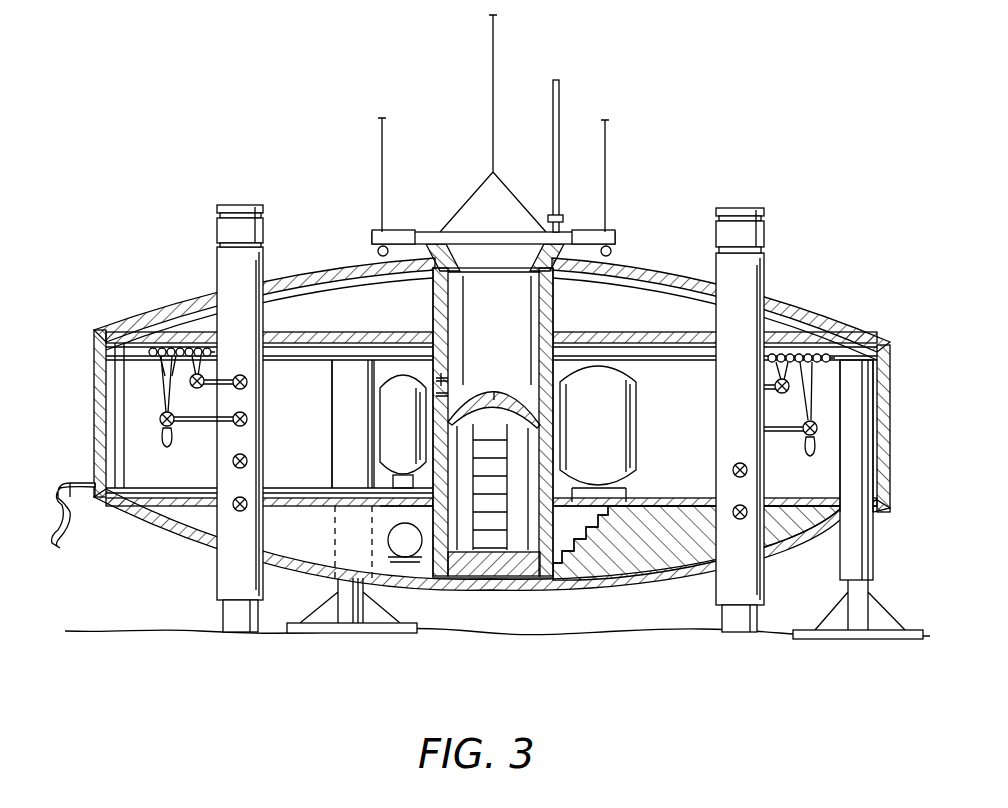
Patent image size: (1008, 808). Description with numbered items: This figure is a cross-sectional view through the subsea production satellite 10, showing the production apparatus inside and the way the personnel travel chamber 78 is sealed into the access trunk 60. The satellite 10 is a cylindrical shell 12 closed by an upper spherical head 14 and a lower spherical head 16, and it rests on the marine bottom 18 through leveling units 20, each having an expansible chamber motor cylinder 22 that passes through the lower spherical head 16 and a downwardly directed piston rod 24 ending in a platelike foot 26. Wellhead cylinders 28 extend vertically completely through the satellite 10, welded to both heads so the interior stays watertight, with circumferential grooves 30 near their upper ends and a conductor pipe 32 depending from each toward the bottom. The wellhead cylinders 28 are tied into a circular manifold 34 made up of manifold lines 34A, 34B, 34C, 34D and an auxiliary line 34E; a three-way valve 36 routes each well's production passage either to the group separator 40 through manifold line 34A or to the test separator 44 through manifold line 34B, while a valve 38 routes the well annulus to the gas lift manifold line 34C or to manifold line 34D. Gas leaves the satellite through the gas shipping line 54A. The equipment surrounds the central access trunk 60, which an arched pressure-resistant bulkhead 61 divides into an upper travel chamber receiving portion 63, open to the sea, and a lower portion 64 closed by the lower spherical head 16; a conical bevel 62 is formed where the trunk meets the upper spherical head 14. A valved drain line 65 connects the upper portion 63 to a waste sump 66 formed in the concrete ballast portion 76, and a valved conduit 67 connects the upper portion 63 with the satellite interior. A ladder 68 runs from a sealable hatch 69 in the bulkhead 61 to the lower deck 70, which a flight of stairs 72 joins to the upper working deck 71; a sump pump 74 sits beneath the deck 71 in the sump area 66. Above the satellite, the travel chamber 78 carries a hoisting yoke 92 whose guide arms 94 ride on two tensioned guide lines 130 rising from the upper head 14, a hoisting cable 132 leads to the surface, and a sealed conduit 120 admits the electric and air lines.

The subsea production satellite 10 is at (470, 430).
The cylindrical shell 12 is at (93, 388).
The upper spherical head 14 is at (342, 270).
The lower spherical head 16 is at (412, 590).
The marine bottom 18 is at (535, 630).
The leveling unit 20 is at (352, 468).
The expansible chamber motor cylinder 22 is at (345, 378).
The piston rod 24 is at (338, 612).
The platelike foot 26 is at (376, 633).
The wellhead cylinder 28 is at (242, 418).
The circumferential grooves 30 is at (265, 243).
The conductor pipe 32 is at (222, 621).
The circular manifold 34 is at (470, 351).
The manifold line 34A is at (215, 353).
The manifold line 34B is at (206, 338).
The gas lift manifold line 34C is at (181, 348).
The manifold line 34D is at (163, 348).
The auxiliary line 34E is at (160, 362).
The three-way two-position valve 36 is at (205, 389).
The three-way two-position valve 38 is at (173, 432).
The group separator 40 is at (611, 440).
The test separator 44 is at (413, 440).
The gas shipping line 54A is at (68, 483).
The access trunk 60 is at (509, 411).
The arched pressure-resistant bulkhead 61 is at (530, 405).
The conical bevel 62 is at (481, 283).
The upper travel chamber receiving portion 63 is at (485, 386).
The lower portion of access trunk 64 is at (496, 487).
The valved drain line 65 is at (426, 512).
The waste sump 66 is at (312, 530).
The valved conduit 67 is at (450, 378).
The ladder 68 is at (508, 482).
The sealable hatch 69 is at (493, 390).
The lower deck 70 is at (510, 545).
The upper working deck 71 is at (663, 506).
The flight of stairs 72 is at (575, 530).
The sump pump 74 is at (390, 537).
The concrete ballast portion 76 is at (674, 539).
The travel chamber 78 is at (566, 232).
The hoisting yoke 92 is at (509, 228).
The guide arms 94 is at (392, 231).
The sealed conduit 120 is at (577, 151).
The tensioned guide lines 130 is at (380, 160).
The hoisting cable 132 is at (490, 104).